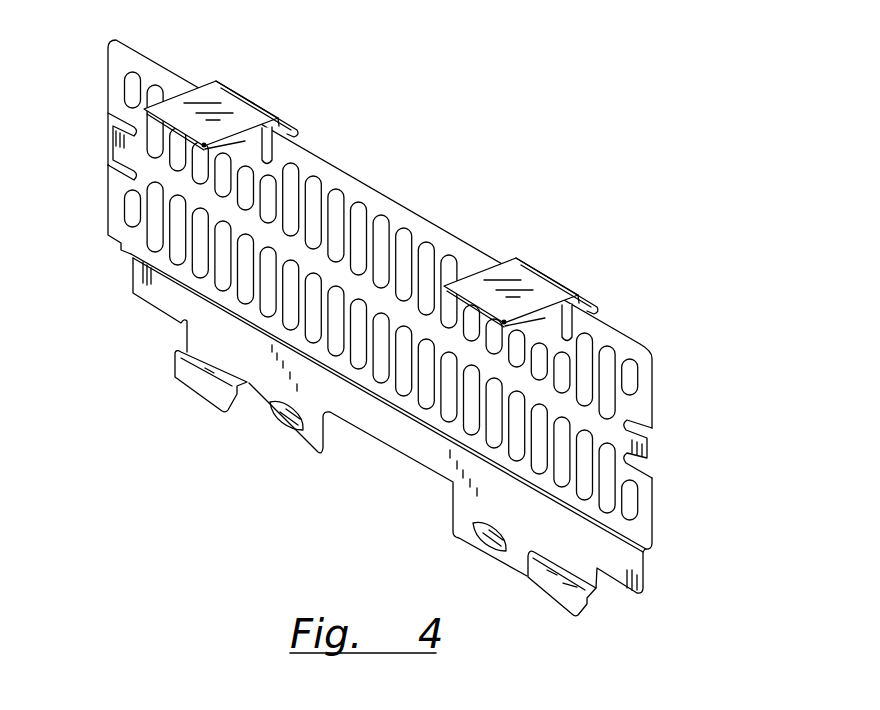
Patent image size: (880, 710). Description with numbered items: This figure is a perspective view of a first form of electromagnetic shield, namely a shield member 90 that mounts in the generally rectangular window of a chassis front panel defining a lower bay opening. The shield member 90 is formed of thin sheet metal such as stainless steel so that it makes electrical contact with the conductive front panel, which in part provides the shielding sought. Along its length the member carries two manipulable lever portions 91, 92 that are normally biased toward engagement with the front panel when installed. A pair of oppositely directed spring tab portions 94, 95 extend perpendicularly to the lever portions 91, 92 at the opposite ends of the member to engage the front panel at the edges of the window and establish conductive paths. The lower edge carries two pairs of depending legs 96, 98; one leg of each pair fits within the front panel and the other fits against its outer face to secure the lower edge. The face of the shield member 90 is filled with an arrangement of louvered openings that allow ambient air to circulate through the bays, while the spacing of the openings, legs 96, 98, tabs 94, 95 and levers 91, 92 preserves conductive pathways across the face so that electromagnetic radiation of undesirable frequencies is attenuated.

The shield member 90 is at (660, 352).
The lever portion 91 is at (204, 78).
The lever portion 92 is at (500, 255).
The spring tab portion 94 is at (110, 138).
The spring tab portion 95 is at (653, 473).
The depending leg 96 is at (254, 418).
The depending leg 98 is at (521, 580).